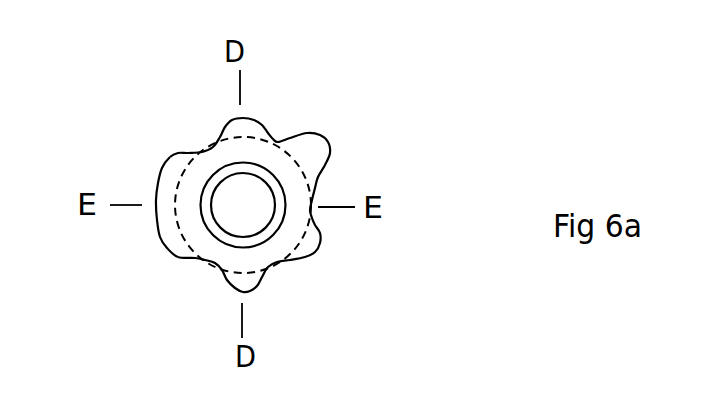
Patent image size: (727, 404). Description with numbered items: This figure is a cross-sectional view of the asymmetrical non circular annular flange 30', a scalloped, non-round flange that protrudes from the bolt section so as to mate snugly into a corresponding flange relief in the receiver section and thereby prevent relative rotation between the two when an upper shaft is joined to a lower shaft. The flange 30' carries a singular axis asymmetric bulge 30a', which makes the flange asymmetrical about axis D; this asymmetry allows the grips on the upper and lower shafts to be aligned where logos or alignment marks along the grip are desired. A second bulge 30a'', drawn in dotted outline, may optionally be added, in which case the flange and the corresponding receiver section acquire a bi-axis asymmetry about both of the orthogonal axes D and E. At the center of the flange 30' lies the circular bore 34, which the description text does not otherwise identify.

The asymmetrical non circular annular flange 30' is at (300, 190).
The singular axis asymmetric bulge 30a' is at (111, 226).
The bulge 30a'' is at (346, 126).
The central bore 34 is at (253, 165).